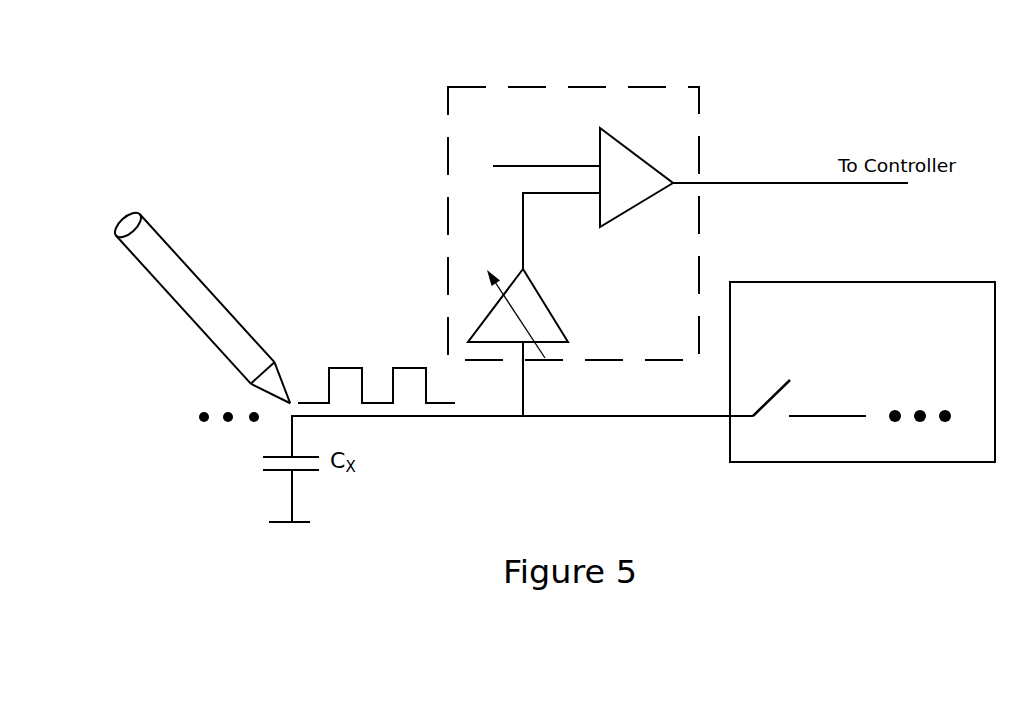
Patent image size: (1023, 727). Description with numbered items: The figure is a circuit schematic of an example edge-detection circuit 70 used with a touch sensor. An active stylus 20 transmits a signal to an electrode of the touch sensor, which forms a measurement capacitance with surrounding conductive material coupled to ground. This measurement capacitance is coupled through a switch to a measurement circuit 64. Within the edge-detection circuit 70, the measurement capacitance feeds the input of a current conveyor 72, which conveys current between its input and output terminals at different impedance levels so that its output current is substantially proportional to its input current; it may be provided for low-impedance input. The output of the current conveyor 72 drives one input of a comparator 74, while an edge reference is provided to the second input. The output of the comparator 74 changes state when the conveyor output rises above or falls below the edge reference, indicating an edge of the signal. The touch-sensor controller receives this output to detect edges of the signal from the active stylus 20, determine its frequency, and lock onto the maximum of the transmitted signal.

The active stylus 20 is at (140, 190).
The edge-detection circuit 70 is at (518, 66).
The current conveyor 72 is at (582, 302).
The comparator 74 is at (672, 138).
The measurement circuit 64 is at (862, 372).